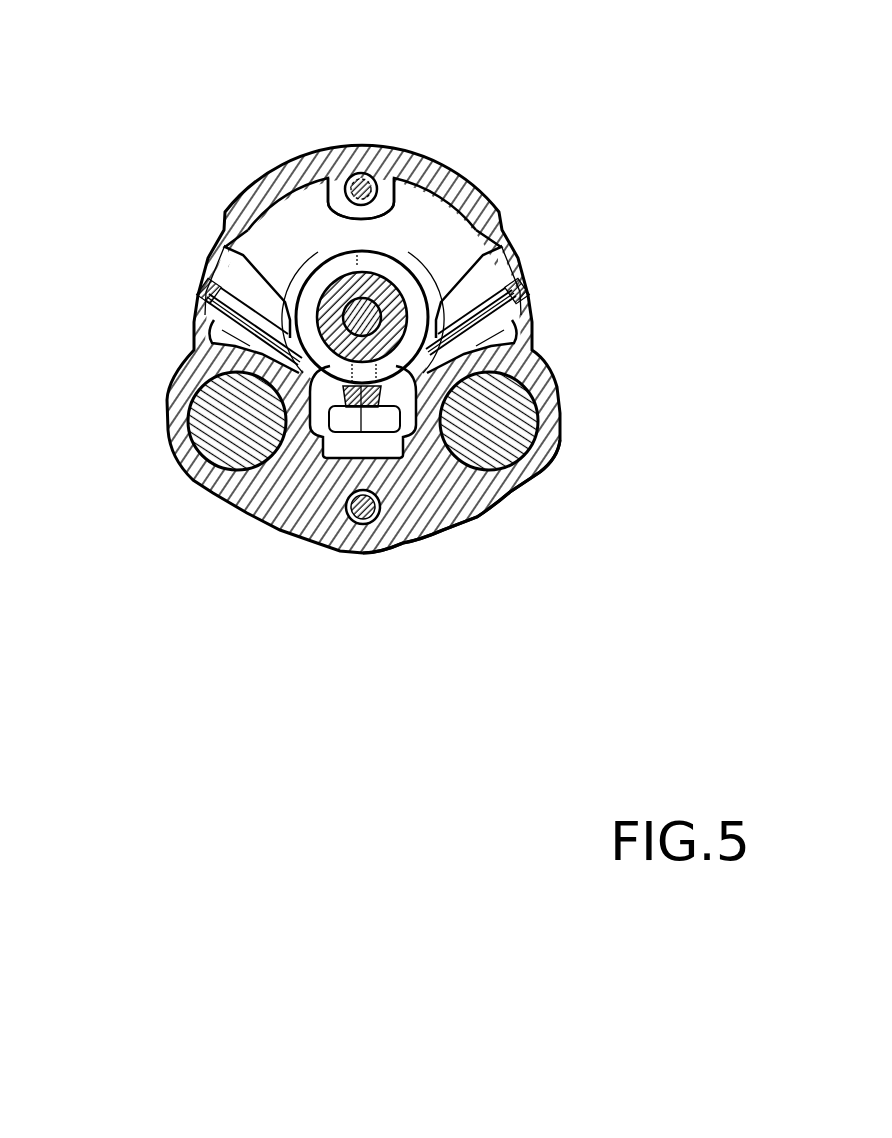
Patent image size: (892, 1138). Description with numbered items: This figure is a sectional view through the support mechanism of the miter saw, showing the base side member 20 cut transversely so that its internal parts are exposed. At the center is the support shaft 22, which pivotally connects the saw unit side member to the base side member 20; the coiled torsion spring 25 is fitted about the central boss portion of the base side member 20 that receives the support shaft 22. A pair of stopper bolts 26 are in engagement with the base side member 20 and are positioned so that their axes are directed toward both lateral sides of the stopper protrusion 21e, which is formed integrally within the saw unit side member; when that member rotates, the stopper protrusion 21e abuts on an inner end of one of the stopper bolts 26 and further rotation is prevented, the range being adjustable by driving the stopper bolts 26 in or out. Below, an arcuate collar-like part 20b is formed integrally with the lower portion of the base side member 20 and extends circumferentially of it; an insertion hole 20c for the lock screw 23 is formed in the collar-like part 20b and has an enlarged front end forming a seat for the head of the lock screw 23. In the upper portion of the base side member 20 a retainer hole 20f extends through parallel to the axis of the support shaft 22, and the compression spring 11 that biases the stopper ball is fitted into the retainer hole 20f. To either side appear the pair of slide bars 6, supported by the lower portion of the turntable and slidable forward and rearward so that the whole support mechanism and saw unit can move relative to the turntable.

The slide bar 6 is at (217, 430).
The compression spring 11 is at (348, 174).
The base side member 20 is at (430, 157).
The collar-like part 20b is at (455, 510).
The insertion hole 20c is at (363, 525).
The retainer hole 20f is at (367, 173).
The stopper protrusion 21e is at (362, 433).
The support shaft 22 is at (360, 318).
The lock screw 23 is at (377, 517).
The coiled torsion spring 25 is at (395, 270).
The stopper bolt 26 is at (210, 280).